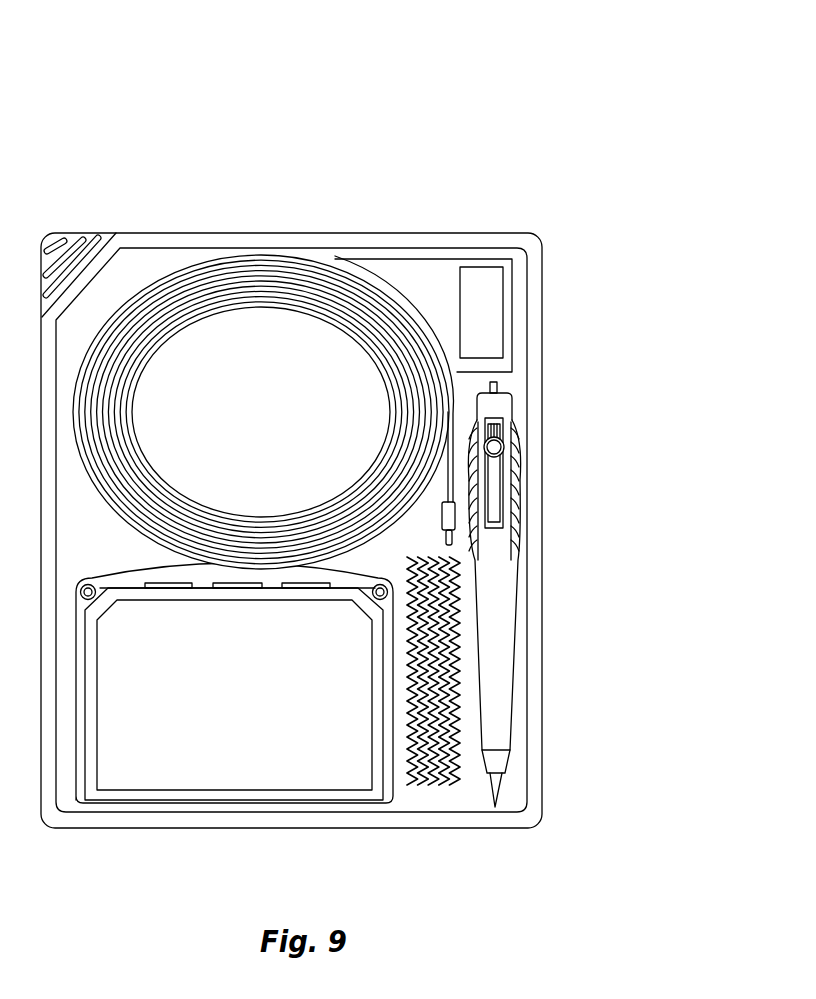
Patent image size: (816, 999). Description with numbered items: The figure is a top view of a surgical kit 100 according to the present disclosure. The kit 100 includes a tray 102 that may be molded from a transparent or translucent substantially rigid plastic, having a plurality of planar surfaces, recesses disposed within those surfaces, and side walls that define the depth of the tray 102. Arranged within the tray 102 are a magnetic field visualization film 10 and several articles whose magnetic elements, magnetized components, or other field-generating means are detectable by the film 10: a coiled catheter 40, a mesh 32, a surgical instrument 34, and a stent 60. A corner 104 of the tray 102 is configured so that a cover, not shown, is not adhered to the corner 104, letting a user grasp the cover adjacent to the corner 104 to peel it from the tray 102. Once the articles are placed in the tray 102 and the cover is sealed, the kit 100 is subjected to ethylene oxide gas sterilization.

The surgical kit 100 is at (499, 122).
The tray 102 is at (545, 703).
The corner 104 is at (65, 233).
The magnetic field visualization film 10 is at (183, 773).
The catheter 40 is at (312, 257).
The mesh 32 is at (495, 308).
The surgical instrument 34 is at (500, 607).
The stent 60 is at (427, 783).